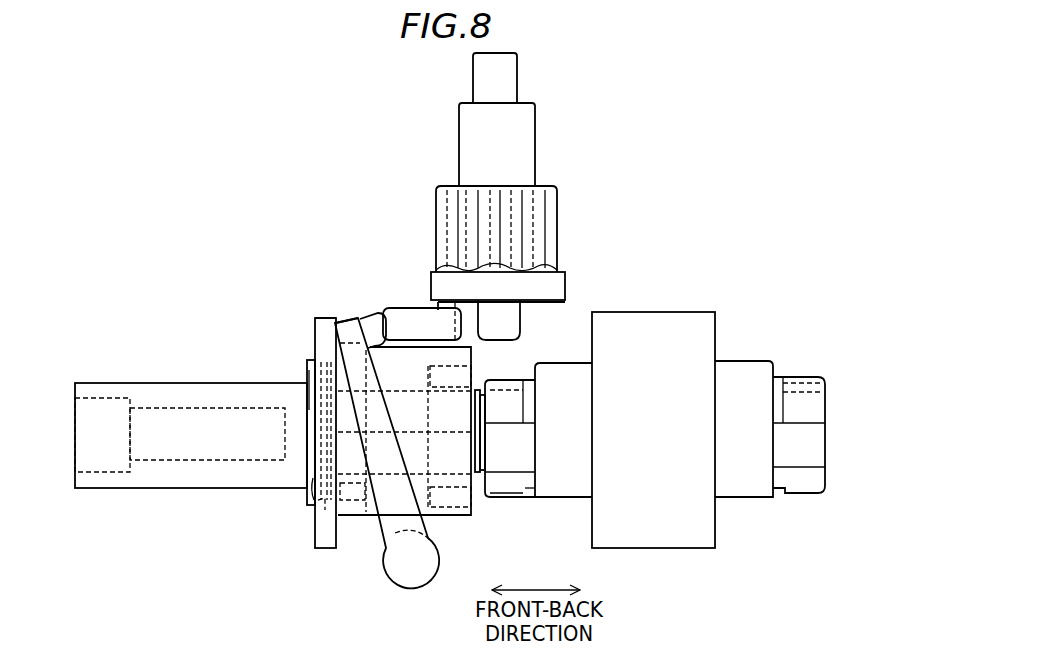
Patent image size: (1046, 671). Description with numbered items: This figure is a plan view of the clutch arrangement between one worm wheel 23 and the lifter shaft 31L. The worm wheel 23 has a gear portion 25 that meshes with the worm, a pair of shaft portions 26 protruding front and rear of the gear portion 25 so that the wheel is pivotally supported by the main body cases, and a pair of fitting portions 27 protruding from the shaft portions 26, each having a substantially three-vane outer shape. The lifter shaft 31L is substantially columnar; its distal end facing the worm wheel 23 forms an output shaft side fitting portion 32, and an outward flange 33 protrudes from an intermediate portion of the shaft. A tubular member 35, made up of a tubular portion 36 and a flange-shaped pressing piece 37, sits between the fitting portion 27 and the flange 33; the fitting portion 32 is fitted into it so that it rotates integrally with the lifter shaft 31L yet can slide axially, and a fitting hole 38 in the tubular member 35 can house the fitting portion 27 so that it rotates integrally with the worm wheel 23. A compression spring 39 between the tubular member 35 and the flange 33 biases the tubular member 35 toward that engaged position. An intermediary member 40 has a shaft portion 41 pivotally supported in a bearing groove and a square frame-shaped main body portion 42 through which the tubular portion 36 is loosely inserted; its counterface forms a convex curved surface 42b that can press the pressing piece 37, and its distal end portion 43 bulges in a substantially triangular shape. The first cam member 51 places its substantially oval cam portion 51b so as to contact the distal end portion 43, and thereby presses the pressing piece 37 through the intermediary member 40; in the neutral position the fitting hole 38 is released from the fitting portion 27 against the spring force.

The worm wheel 23 is at (655, 394).
The gear portion 25 is at (655, 318).
The shaft portions 26 is at (563, 488).
The fitting portions 27 is at (512, 490).
The lifter shaft 31L is at (165, 380).
The output shaft side fitting portion 32 is at (456, 515).
The outward flange 33 is at (312, 500).
The tubular member 35 is at (318, 314).
The tubular portion 36 is at (358, 515).
The pressing piece 37 is at (330, 549).
The fitting hole 38 is at (481, 476).
The compression spring 39 is at (318, 505).
The intermediary member 40 is at (348, 320).
The shaft portion 41 is at (409, 578).
The main body portion 42 is at (310, 462).
The curved surface 42b is at (313, 410).
The distal end portion 43 is at (368, 312).
The first cam member 51 is at (540, 126).
The cam portion 51b is at (408, 313).